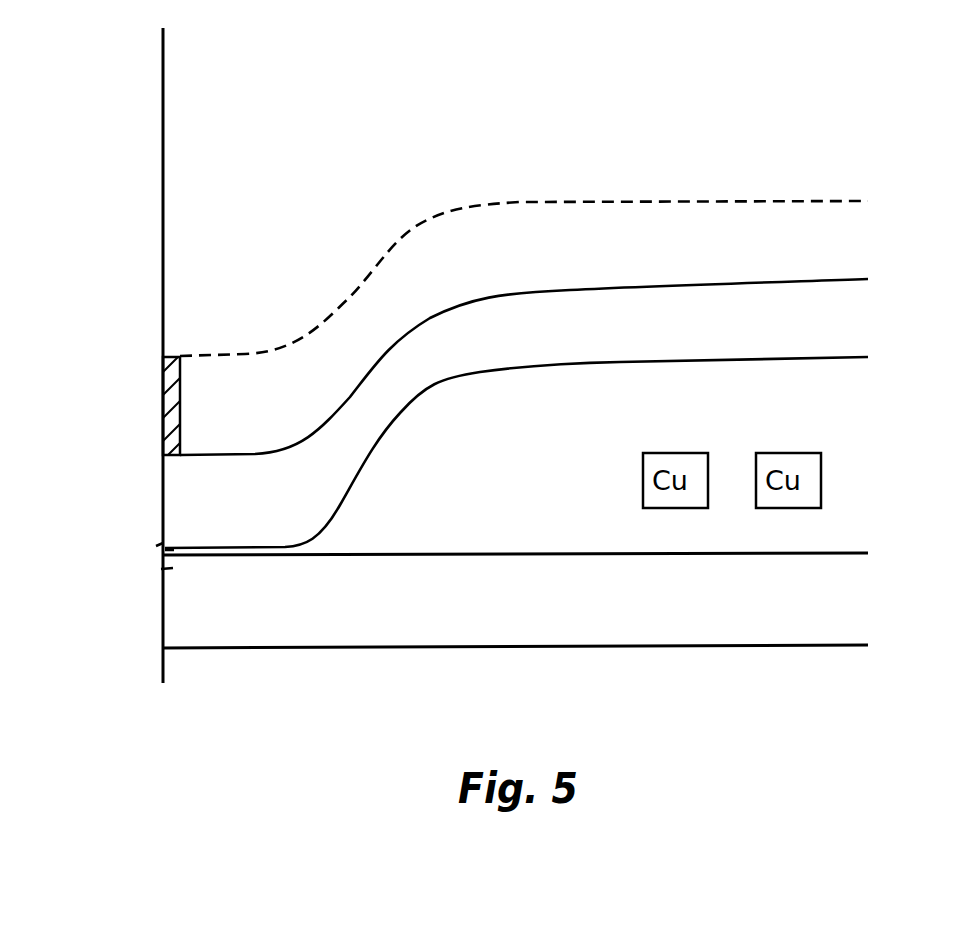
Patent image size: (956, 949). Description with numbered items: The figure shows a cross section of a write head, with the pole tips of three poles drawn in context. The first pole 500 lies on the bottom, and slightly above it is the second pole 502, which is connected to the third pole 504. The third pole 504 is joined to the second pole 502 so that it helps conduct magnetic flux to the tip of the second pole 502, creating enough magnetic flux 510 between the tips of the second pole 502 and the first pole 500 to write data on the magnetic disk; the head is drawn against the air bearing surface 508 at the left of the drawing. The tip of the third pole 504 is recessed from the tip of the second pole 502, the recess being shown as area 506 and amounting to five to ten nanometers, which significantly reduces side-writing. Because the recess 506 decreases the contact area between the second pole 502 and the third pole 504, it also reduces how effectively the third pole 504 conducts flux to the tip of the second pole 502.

The pole P1 500 is at (287, 632).
The pole P2 502 is at (174, 524).
The pole P3 504 is at (364, 300).
The recess 506 is at (166, 392).
The air bearing surface (ABS) 508 is at (113, 78).
The magnetic flux 510 is at (157, 563).